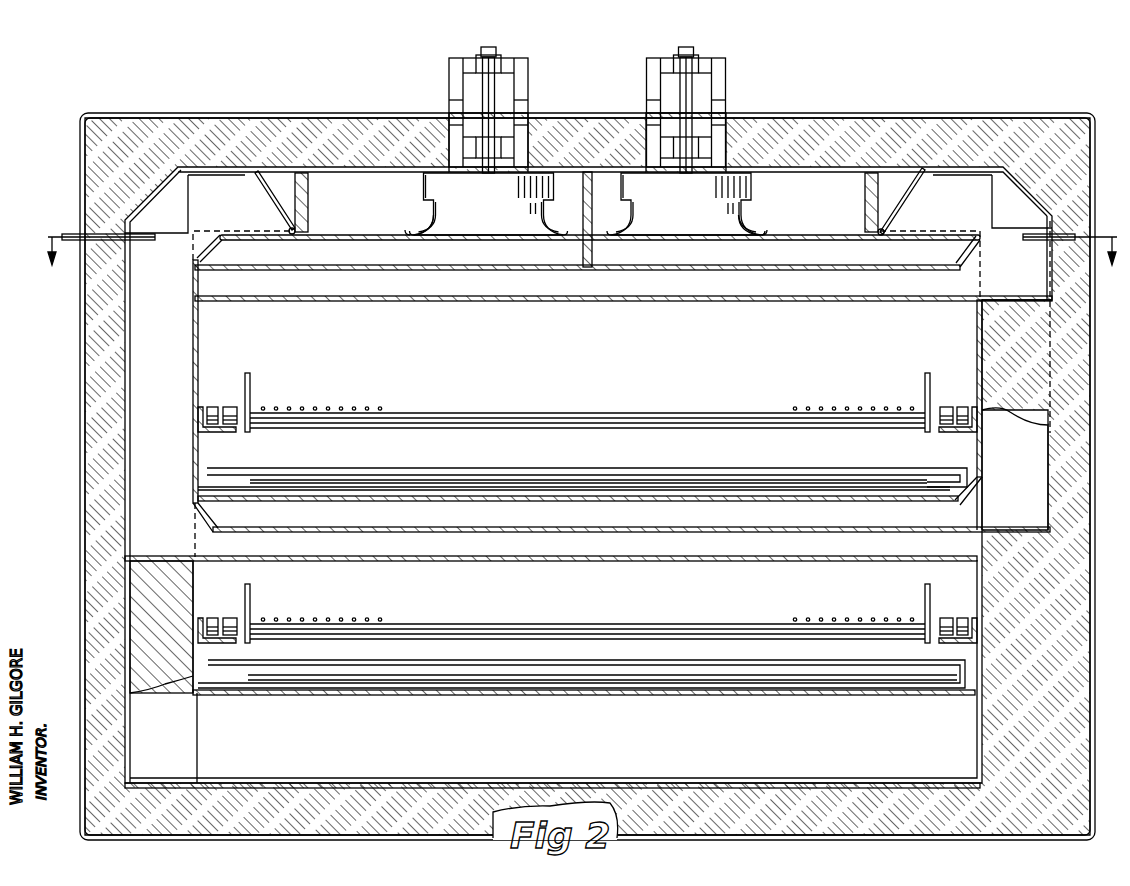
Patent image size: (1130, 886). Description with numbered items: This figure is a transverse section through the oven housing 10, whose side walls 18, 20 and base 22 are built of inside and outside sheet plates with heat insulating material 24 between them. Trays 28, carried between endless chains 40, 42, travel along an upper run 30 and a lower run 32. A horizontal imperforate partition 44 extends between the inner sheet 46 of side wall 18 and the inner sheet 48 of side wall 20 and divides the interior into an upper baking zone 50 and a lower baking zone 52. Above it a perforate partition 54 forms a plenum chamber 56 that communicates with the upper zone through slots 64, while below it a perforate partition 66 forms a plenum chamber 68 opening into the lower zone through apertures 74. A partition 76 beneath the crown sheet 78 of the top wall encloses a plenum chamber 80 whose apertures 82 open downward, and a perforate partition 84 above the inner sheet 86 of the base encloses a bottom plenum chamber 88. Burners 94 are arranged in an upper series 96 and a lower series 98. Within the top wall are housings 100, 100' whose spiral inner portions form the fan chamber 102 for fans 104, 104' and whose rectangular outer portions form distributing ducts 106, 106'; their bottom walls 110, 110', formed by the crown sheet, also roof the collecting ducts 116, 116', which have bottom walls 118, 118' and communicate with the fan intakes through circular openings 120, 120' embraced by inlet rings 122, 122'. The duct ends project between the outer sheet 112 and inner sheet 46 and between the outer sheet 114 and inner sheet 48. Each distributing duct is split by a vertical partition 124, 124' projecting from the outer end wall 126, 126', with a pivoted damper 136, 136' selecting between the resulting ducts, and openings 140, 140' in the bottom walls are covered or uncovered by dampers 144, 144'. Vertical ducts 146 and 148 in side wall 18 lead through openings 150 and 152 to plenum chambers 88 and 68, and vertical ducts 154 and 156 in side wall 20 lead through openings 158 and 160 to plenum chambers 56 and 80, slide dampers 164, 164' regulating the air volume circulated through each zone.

The housing 10 is at (849, 113).
The side wall 18 is at (80, 390).
The side wall 20 is at (1093, 388).
The base 22 is at (690, 841).
The heat insulating material 24 is at (762, 122).
The trays 28 is at (422, 412).
The upper run 30 is at (600, 398).
The lower run 32 is at (600, 626).
The endless chain 40 is at (213, 405).
The endless chain 42 is at (944, 405).
The horizontal imperforate partition 44 is at (742, 530).
The inner sheet 46 is at (198, 343).
The inner sheet 48 is at (980, 332).
The upper baking zone 50 is at (600, 350).
The lower baking zone 52 is at (600, 591).
The horizontal perforate partition 54 is at (603, 469).
The plenum chamber 56 is at (590, 501).
The vents or slots 64 is at (697, 469).
The horizontal perforate partition 66 is at (733, 563).
The plenum chamber 68 is at (551, 548).
The apertures 74 is at (800, 563).
The partition 76 is at (290, 303).
The inner sheet 78 is at (797, 242).
The plenum chamber 80 is at (557, 284).
The apertures 82 is at (328, 303).
The horizontal perforate partition 84 is at (670, 694).
The inner sheet 86 is at (353, 783).
The plenum chamber 88 is at (585, 740).
The fluid fuel burners 94 is at (792, 480).
The upper series 96 is at (348, 472).
The lower series 98 is at (327, 685).
The housing 100 is at (445, 116).
The housing 100' is at (742, 114).
The fan chamber 102 is at (586, 219).
The fan 104 is at (468, 204).
The fan 104' is at (705, 204).
The distributing duct 106 is at (600, 226).
The distributing duct 106' is at (790, 226).
The bottom wall 110 is at (280, 285).
The bottom wall 110' is at (888, 285).
The outer sheet 112 is at (85, 352).
The outer sheet 114 is at (1090, 432).
The collecting duct 116 is at (577, 302).
The collecting duct 116' is at (780, 302).
The bottom wall 118 is at (390, 305).
The bottom wall 118' is at (777, 305).
The circular opening 120 is at (390, 290).
The circular opening 120' is at (777, 290).
The inlet ring 122 is at (401, 223).
The inlet ring 122' is at (771, 223).
The vertical partition 124 is at (298, 155).
The vertical partition 124' is at (906, 155).
The outer end wall 126 is at (89, 249).
The outer end wall 126' is at (1076, 249).
The flapper valve or damper 136 is at (322, 202).
The flapper valve or damper 136' is at (844, 202).
The opening 140 is at (249, 249).
The opening 140' is at (924, 251).
The flapper valve or damper 144 is at (253, 202).
The flapper valve or damper 144' is at (921, 201).
The vertical duct 146 is at (163, 729).
The vertical duct 148 is at (161, 398).
The opening 150 is at (198, 746).
The opening 152 is at (193, 527).
The vertical duct 154 is at (1015, 469).
The vertical duct 156 is at (1016, 268).
The opening 158 is at (983, 501).
The opening 160 is at (983, 266).
The slide damper 164 is at (114, 256).
The slide damper 164' is at (1001, 226).